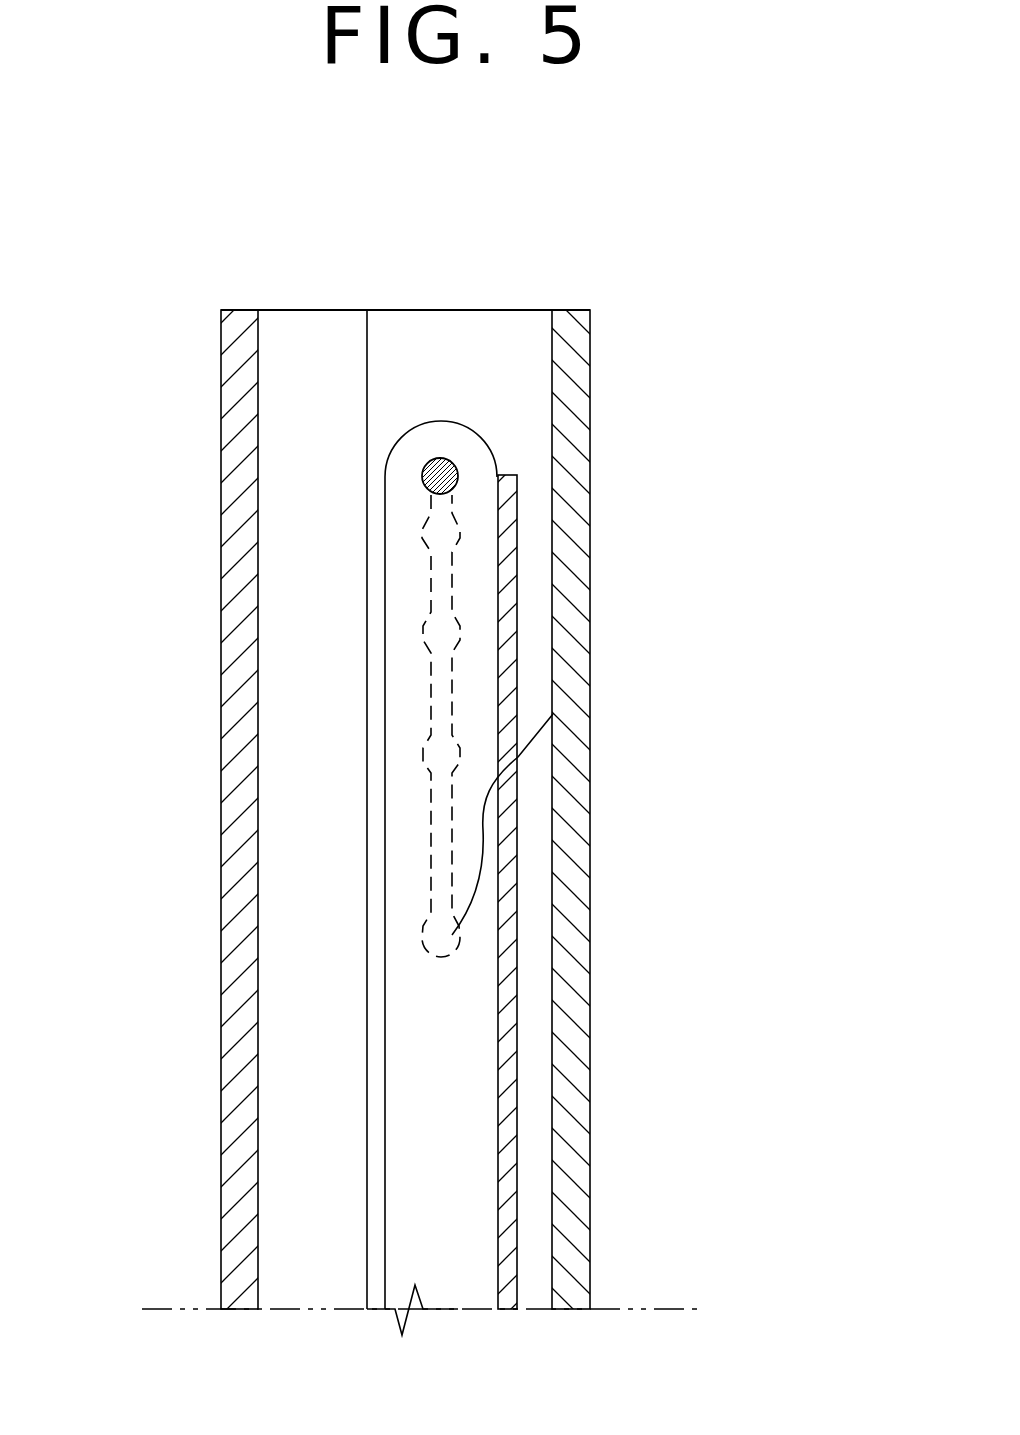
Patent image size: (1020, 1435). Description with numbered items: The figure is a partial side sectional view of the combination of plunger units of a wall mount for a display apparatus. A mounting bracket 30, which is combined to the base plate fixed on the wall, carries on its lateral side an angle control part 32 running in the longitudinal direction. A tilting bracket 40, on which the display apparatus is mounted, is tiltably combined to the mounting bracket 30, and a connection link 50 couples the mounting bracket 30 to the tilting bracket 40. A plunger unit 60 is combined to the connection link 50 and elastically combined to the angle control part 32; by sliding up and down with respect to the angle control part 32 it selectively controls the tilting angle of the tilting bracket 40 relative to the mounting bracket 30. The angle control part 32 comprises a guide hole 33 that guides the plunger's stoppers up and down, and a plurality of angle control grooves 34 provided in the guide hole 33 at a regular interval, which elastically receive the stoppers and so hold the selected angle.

The mounting bracket 30 is at (575, 1187).
The angle control part 32 is at (607, 717).
The guide hole 33 is at (450, 698).
The angle control grooves 34 is at (457, 478).
The tilting bracket 40 is at (222, 1035).
The connection link 50 is at (540, 1037).
The plunger unit 60 is at (423, 469).